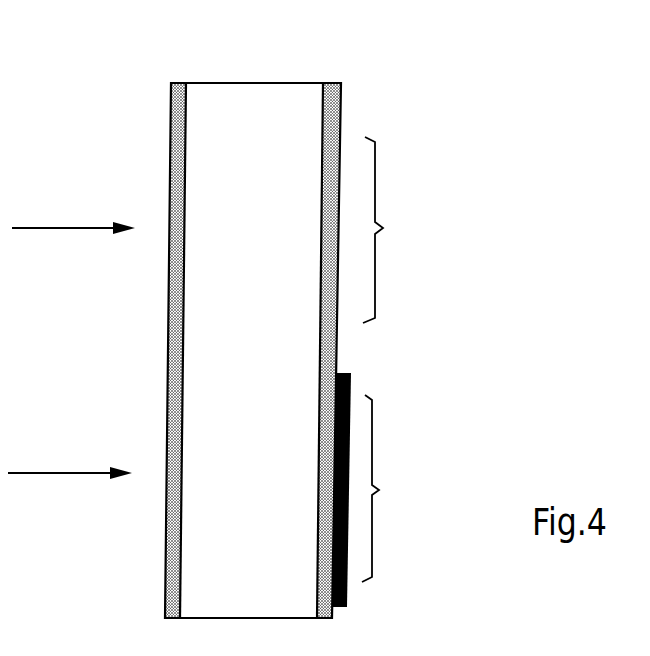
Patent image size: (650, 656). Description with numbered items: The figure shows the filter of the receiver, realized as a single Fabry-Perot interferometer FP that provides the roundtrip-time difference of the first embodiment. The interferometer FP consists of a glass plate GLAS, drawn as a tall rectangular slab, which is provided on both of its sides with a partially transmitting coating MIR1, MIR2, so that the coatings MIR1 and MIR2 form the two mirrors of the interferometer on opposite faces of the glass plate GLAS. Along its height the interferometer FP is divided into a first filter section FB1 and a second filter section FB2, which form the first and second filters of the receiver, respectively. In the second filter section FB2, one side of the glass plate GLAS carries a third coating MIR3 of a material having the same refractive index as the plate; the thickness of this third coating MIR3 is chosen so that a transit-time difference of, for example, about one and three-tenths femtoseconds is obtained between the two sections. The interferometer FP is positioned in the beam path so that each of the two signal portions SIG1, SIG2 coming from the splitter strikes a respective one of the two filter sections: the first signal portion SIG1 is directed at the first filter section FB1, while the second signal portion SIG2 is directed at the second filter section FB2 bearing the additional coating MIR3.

The Fabry-Perot interferometer FP is at (281, 328).
The glass plate GLAS is at (259, 102).
The partially transmitting coating MIR1 is at (340, 104).
The partially transmitting coating MIR2 is at (172, 133).
The third coating MIR3 is at (347, 593).
The first signal portion SIG1 is at (73, 207).
The second signal portion SIG2 is at (70, 453).
The first filter section FB1 is at (400, 230).
The second filter section FB2 is at (397, 488).